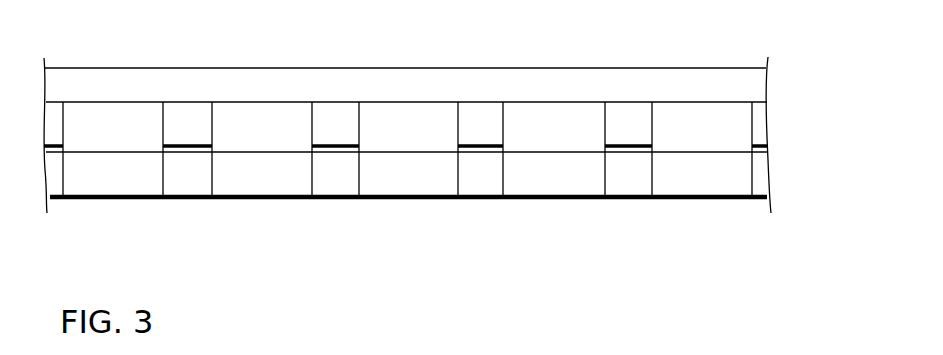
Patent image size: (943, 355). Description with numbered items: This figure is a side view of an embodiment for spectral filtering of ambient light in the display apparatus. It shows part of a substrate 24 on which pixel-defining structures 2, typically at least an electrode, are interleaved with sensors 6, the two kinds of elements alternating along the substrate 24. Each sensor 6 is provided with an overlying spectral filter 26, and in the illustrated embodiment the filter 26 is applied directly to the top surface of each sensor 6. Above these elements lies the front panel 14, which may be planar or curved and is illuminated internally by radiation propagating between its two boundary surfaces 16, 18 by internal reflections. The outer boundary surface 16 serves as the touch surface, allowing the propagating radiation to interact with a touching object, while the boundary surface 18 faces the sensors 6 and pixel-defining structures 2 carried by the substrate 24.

The pixel-defining structure 2 is at (126, 173).
The sensor 6 is at (190, 182).
The front panel 14 is at (767, 93).
The outer boundary surface 16 is at (733, 67).
The boundary surface 18 is at (722, 102).
The substrate 24 is at (725, 200).
The spectral filter 26 is at (183, 143).